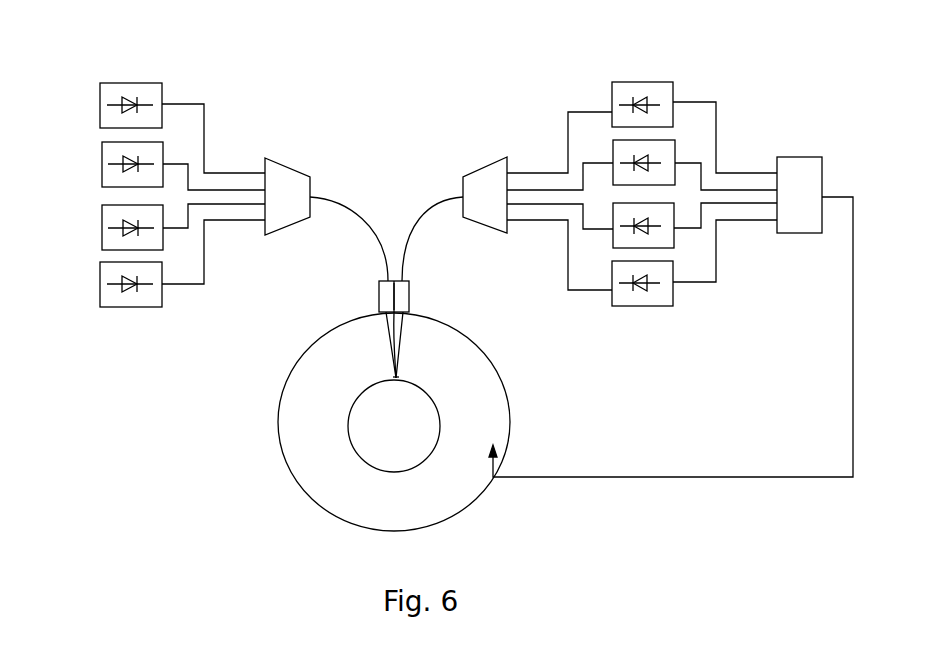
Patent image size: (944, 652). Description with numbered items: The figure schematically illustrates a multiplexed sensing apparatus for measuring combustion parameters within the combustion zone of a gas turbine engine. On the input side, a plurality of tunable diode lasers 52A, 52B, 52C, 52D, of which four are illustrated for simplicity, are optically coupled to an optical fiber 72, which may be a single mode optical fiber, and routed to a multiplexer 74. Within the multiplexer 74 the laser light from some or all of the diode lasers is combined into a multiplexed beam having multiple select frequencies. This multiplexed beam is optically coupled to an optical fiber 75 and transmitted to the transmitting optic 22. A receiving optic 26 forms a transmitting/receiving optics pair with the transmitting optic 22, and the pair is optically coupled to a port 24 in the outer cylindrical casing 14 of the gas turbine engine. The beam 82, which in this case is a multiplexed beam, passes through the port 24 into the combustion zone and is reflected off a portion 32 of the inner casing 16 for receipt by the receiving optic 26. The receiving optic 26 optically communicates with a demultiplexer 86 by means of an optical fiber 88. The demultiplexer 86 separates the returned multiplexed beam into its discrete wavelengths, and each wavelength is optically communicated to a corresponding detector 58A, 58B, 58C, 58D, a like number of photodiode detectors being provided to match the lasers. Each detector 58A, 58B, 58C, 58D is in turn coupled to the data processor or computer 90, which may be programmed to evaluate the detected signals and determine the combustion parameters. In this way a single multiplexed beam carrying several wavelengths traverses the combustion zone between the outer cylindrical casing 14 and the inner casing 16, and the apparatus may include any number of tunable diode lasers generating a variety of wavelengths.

The outer cylindrical casing 14 is at (330, 329).
The inner casing 16 is at (441, 426).
The transmitting optic 22 is at (386, 303).
The port 24 is at (396, 345).
The receiving optic 26 is at (402, 295).
The portion of the inner casing 32 is at (397, 380).
The tunable diode laser 52A is at (100, 105).
The tunable diode laser 52B is at (102, 164).
The tunable diode laser 52C is at (102, 228).
The tunable diode laser 52D is at (100, 285).
The detector 58A is at (643, 82).
The detector 58B is at (645, 139).
The detector 58C is at (645, 249).
The detector 58D is at (643, 307).
The optical fiber 72 is at (188, 103).
The multiplexer 74 is at (295, 180).
The optical fiber 75 is at (340, 200).
The beam 82 is at (392, 357).
The demultiplexer 86 is at (488, 163).
The optical fiber 88 is at (429, 208).
The data processor or computer 90 is at (799, 157).